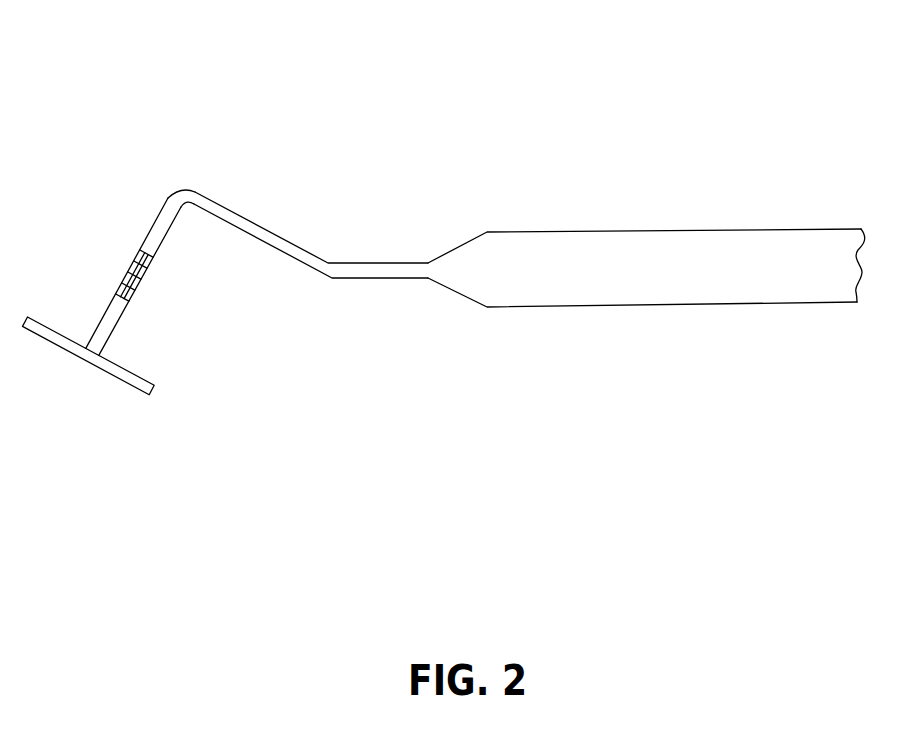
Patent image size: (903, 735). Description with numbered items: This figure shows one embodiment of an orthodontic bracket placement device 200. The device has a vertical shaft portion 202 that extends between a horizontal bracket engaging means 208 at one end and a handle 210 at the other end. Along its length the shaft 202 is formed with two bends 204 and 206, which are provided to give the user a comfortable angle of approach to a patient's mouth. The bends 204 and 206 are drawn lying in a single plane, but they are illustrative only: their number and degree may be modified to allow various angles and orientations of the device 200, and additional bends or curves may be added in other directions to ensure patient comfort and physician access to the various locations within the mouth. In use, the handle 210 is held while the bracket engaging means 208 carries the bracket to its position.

The orthodontic bracket placement device 200 is at (152, 44).
The vertical shaft portion 202 is at (127, 312).
The bend 204 is at (187, 192).
The bend 206 is at (332, 262).
The horizontal bracket engaging means 208 is at (47, 332).
The handle 210 is at (600, 293).